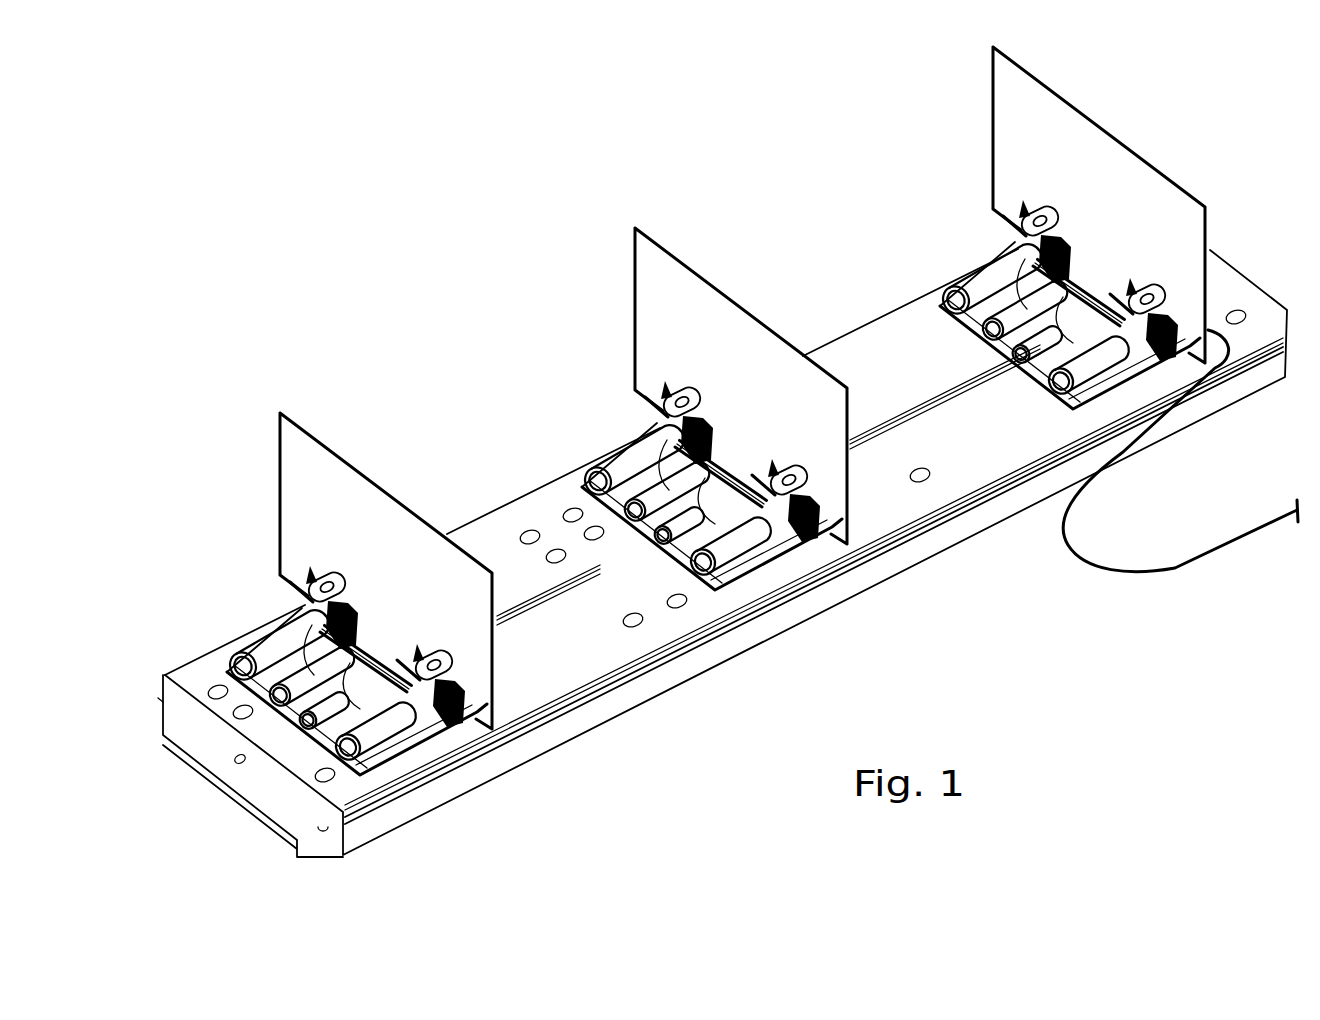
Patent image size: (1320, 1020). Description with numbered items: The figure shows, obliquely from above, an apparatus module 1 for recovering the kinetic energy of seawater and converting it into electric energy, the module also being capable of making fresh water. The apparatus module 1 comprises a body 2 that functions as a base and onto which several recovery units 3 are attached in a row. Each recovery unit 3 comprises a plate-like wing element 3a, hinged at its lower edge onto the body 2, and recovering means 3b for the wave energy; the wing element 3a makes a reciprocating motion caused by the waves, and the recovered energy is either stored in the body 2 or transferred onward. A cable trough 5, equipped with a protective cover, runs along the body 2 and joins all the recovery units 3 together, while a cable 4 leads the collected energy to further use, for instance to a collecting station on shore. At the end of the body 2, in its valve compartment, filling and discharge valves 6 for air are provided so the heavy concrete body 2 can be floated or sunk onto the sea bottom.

The apparatus module 1 is at (728, 428).
The body 2 is at (647, 690).
The recovery unit 3 is at (702, 387).
The wing element 3a is at (310, 445).
The recovering means 3b is at (265, 640).
The cable 4 is at (1180, 569).
The cable trough 5 is at (910, 407).
The filling and discharge valves for air 6 is at (240, 765).